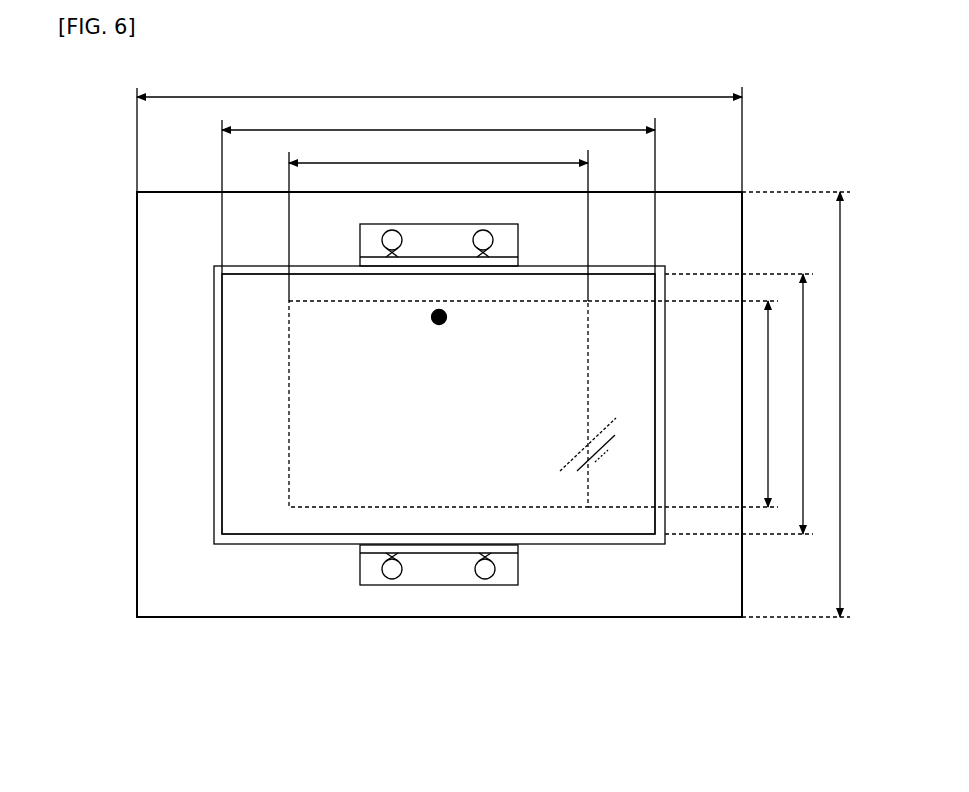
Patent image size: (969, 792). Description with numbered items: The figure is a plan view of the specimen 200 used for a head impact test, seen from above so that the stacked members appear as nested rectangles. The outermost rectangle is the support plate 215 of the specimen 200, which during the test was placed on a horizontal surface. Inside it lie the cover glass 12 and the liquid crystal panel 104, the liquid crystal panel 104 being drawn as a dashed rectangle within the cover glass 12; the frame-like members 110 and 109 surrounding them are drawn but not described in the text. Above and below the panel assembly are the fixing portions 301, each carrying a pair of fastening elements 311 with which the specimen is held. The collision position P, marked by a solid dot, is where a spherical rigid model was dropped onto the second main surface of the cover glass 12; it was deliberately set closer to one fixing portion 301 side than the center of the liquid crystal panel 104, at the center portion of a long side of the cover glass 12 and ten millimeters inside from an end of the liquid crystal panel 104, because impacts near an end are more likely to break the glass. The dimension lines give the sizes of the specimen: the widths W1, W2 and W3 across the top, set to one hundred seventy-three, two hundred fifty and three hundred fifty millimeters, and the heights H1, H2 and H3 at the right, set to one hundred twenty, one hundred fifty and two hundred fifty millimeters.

The specimen 200 is at (783, 113).
The support plate 215 is at (178, 321).
The frame 110 is at (216, 440).
The display panel 109 is at (260, 318).
The cover glass 12 is at (252, 392).
The liquid crystal panel 104 is at (289, 483).
The fixing portion 301 is at (512, 563).
The fixing portion 311 is at (385, 579).
The collision position P is at (441, 325).
The width W1 is at (438, 220).
The width W2 is at (438, 190).
The width W3 is at (439, 132).
The height H1 is at (693, 404).
The height H2 is at (749, 404).
The height H3 is at (805, 404).